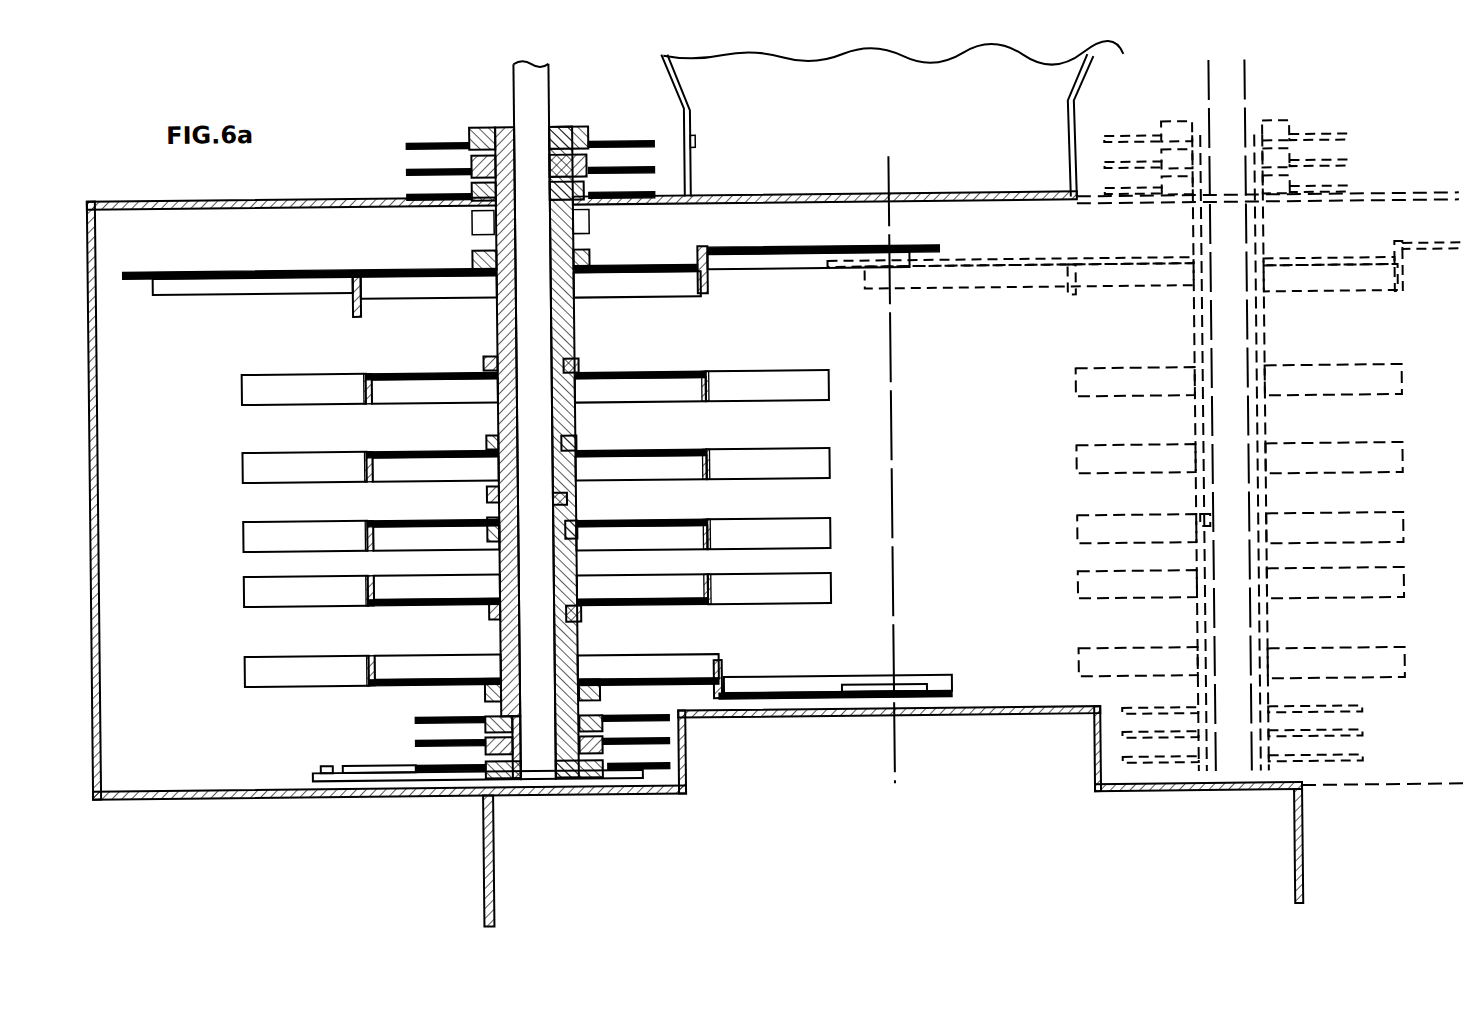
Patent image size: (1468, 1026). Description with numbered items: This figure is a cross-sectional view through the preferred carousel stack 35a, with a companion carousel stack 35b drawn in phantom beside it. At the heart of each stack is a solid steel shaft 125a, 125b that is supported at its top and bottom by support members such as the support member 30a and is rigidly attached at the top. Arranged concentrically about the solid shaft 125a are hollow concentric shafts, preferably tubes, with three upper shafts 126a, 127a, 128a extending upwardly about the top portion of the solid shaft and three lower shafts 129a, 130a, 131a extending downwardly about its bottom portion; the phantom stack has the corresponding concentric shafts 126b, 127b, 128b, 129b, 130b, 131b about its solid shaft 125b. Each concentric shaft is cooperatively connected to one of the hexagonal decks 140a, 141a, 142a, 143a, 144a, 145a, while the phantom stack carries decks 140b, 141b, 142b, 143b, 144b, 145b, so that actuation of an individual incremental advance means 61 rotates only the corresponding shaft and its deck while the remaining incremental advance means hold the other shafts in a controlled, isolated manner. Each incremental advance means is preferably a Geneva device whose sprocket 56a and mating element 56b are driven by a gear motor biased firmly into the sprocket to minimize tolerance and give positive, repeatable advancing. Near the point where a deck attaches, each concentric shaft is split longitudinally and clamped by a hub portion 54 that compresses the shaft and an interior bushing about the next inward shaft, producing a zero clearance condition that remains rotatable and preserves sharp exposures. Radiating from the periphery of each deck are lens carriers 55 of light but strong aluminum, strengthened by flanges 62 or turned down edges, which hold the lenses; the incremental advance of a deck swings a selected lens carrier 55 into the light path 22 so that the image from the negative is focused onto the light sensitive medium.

The light path 22 is at (894, 430).
The support member 30a is at (1180, 795).
The carousel stack 35a is at (188, 420).
The carousel stack 35b is at (1432, 342).
The hub portion 54 is at (586, 256).
The lens carrier 55 is at (243, 268).
The sprocket of Geneva device 56a is at (396, 178).
The Geneva device element 56b is at (376, 768).
The incremental advance means 61 is at (307, 290).
The flange 62 is at (802, 268).
The solid shaft 125a is at (521, 86).
The solid shaft 125b is at (1240, 85).
The concentric hollow shaft 126a is at (498, 325).
The concentric hollow shaft 126b is at (1196, 312).
The concentric hollow shaft 127a is at (499, 415).
The concentric hollow shaft 128a is at (502, 488).
The concentric hollow shaft 129a is at (504, 516).
The concentric hollow shaft 130a is at (506, 588).
The concentric hollow shaft 131a is at (505, 644).
The concentric hollow shaft 127b is at (1196, 405).
The concentric hollow shaft 128b is at (1205, 478).
The concentric hollow shaft 129b is at (1262, 497).
The concentric hollow shaft 130b is at (1200, 552).
The concentric hollow shaft 131b is at (1196, 625).
The deck 140a is at (676, 263).
The deck 141a is at (676, 369).
The deck 142a is at (680, 448).
The deck 143a is at (690, 518).
The deck 144a is at (678, 606).
The deck 145a is at (716, 662).
The deck 140b is at (1330, 264).
The deck 141b is at (1346, 370).
The deck 142b is at (1346, 448).
The deck 143b is at (1345, 518).
The deck 144b is at (1343, 590).
The deck 145b is at (1375, 656).